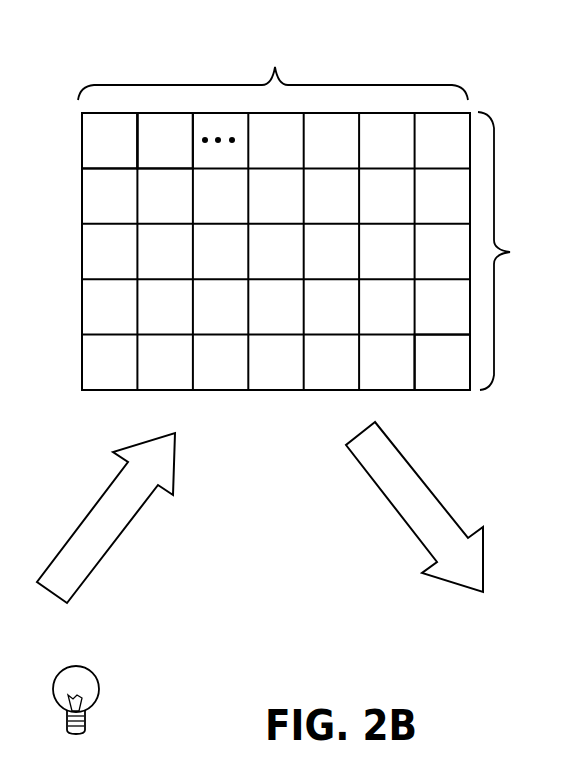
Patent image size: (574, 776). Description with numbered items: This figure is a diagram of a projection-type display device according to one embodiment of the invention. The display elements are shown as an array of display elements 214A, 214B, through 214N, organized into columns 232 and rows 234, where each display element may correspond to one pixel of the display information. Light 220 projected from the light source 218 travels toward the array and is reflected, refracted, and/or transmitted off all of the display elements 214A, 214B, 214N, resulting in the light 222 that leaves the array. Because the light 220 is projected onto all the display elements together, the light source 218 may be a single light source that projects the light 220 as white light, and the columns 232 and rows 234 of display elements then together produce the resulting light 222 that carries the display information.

The columns 232 is at (274, 215).
The rows 234 is at (515, 251).
The display element 214A is at (87, 154).
The display element 214B is at (142, 154).
The display element 214N is at (422, 373).
The light 220 is at (140, 507).
The light 222 is at (445, 508).
The light source 218 is at (75, 667).